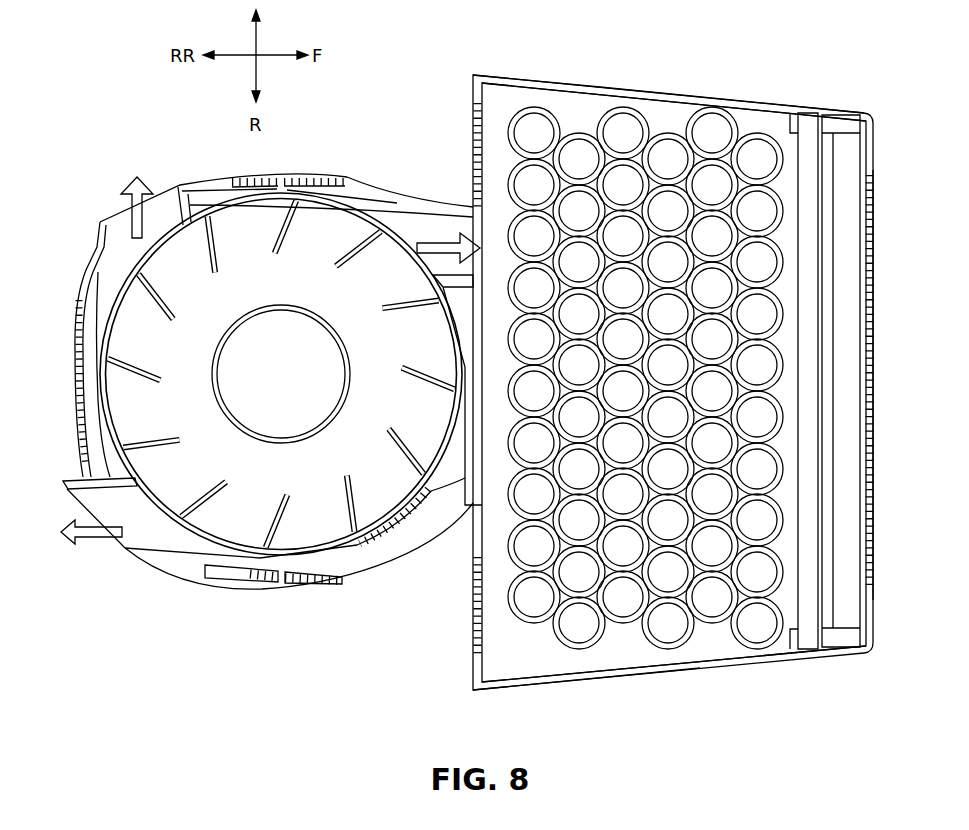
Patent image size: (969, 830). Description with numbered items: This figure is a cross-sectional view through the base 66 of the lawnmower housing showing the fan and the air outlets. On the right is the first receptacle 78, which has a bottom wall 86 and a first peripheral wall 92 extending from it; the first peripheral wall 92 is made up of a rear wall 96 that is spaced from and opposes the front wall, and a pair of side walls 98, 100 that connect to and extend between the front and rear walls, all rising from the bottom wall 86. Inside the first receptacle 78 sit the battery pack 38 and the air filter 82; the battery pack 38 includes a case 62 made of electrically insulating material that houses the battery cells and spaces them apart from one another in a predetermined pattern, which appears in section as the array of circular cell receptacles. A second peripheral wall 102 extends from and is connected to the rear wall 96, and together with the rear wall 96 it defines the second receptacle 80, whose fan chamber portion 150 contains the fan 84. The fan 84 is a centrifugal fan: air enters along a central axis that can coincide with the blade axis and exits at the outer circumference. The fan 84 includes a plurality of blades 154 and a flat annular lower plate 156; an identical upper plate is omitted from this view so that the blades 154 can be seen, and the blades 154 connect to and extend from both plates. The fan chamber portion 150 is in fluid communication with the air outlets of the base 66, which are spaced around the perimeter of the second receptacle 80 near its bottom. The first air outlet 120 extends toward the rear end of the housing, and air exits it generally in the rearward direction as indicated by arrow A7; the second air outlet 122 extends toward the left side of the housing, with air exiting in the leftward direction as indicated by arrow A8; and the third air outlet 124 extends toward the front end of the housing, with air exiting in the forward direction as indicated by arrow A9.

The battery pack 38 is at (668, 118).
The case 62 is at (685, 650).
The base 66 is at (585, 77).
The first receptacle 78 is at (888, 566).
The second receptacle 80 is at (349, 597).
The air filter 82 is at (792, 152).
The fan 84 is at (140, 500).
The bottom wall 86 is at (535, 655).
The first peripheral wall 92 is at (873, 340).
The rear wall 96 is at (476, 86).
The side wall 98 is at (658, 88).
The side wall 100 is at (780, 668).
The second peripheral wall 102 is at (238, 590).
The first air outlet 120 is at (130, 540).
The second air outlet 122 is at (118, 225).
The third air outlet 124 is at (433, 222).
The fan chamber portion 150 is at (423, 528).
The blades 154 is at (168, 322).
The lower plate 156 is at (142, 347).
The arrow A7 is at (70, 538).
The arrow A8 is at (158, 188).
The arrow A9 is at (415, 248).